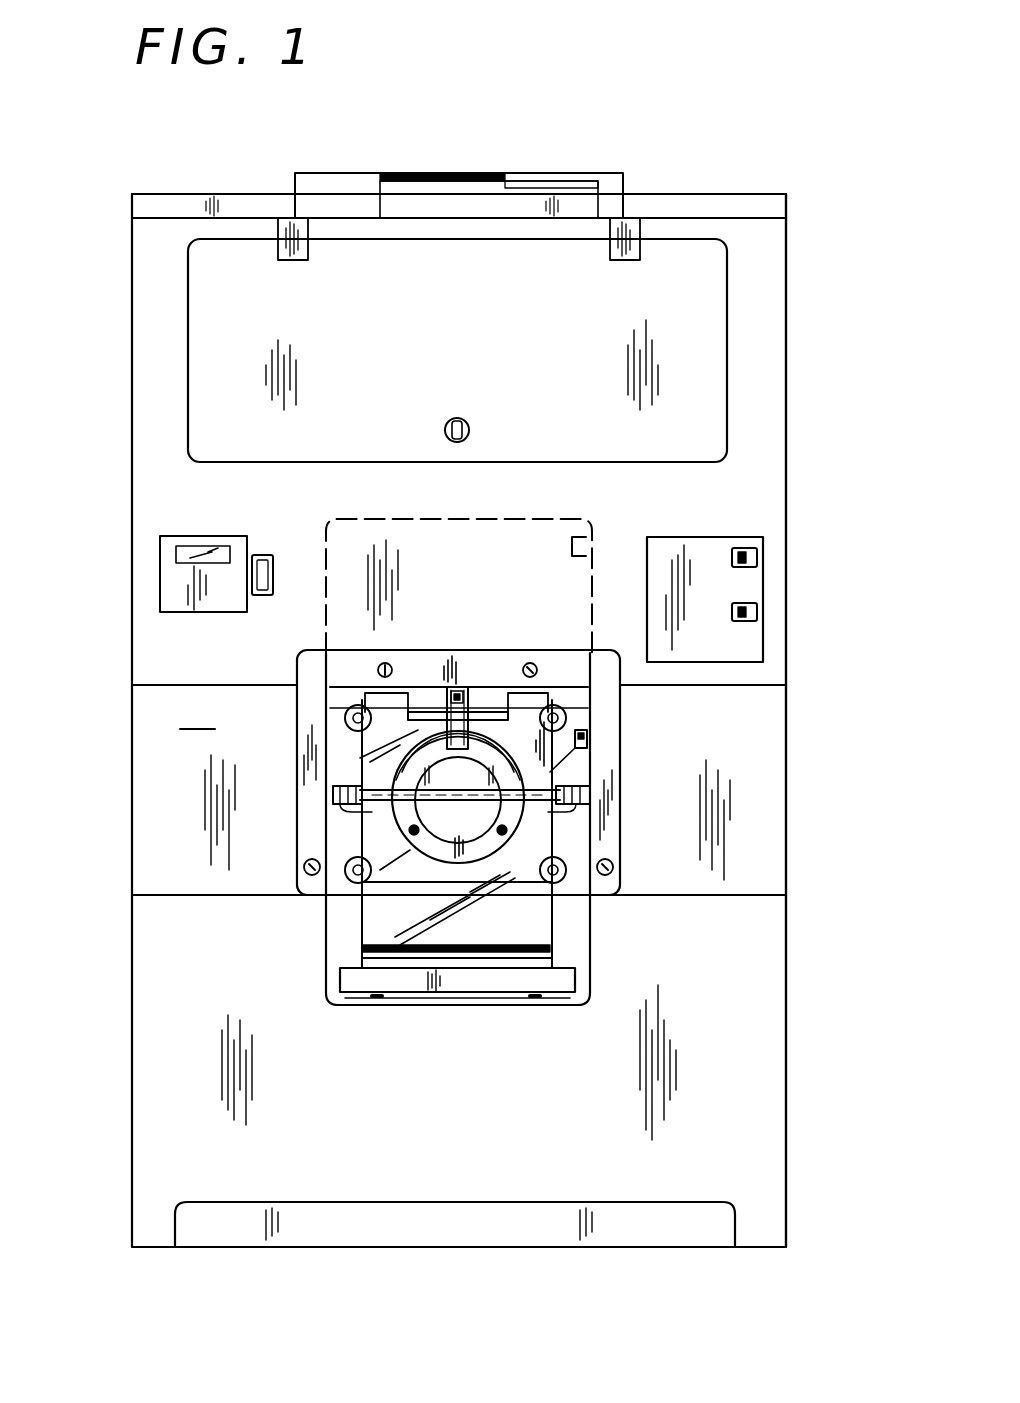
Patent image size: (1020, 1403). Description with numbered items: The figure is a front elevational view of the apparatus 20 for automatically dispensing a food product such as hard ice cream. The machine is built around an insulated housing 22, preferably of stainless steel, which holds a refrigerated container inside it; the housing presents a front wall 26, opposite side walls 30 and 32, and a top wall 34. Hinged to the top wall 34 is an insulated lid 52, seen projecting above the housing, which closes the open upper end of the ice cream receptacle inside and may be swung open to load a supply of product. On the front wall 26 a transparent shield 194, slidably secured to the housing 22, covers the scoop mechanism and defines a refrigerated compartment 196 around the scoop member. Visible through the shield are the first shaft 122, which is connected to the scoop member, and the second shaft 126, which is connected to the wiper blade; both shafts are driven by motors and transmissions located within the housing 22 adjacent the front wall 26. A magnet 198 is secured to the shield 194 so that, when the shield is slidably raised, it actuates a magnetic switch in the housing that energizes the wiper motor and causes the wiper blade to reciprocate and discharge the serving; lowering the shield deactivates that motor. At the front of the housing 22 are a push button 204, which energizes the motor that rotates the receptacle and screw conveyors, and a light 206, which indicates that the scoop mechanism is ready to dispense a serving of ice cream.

The apparatus 20 is at (84, 491).
The insulated housing 22 is at (118, 613).
The front wall 26 is at (459, 797).
The side wall 30 is at (132, 316).
The side wall 32 is at (788, 439).
The top wall 34 is at (676, 196).
The insulated lid 52 is at (358, 178).
The first shaft 122 is at (372, 825).
The second shaft 126 is at (540, 778).
The transparent shield 194 is at (588, 548).
The refrigerated compartment 196 is at (410, 865).
The magnet 198 is at (587, 738).
The push button 204 is at (758, 556).
The light 206 is at (758, 612).